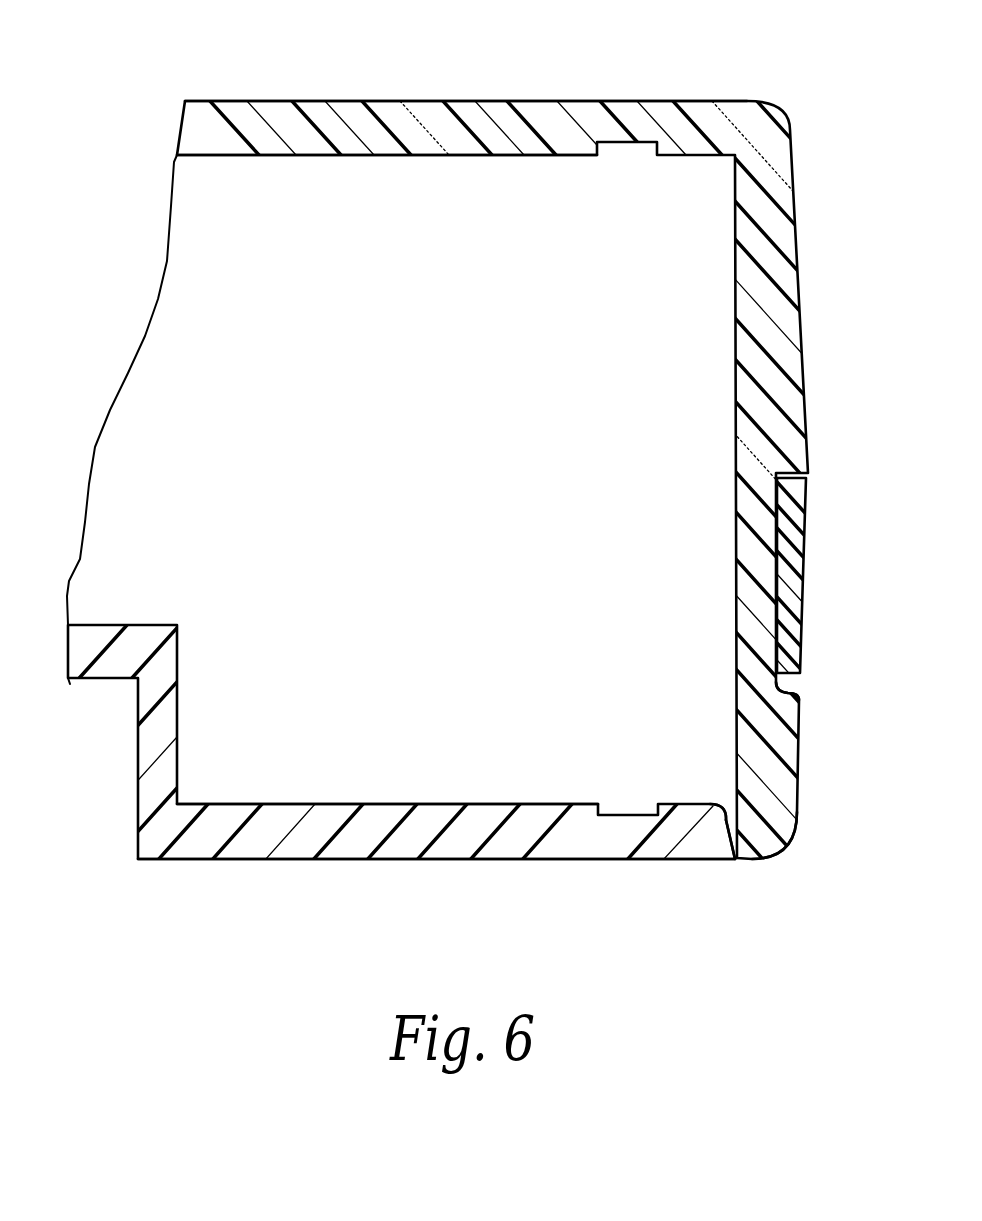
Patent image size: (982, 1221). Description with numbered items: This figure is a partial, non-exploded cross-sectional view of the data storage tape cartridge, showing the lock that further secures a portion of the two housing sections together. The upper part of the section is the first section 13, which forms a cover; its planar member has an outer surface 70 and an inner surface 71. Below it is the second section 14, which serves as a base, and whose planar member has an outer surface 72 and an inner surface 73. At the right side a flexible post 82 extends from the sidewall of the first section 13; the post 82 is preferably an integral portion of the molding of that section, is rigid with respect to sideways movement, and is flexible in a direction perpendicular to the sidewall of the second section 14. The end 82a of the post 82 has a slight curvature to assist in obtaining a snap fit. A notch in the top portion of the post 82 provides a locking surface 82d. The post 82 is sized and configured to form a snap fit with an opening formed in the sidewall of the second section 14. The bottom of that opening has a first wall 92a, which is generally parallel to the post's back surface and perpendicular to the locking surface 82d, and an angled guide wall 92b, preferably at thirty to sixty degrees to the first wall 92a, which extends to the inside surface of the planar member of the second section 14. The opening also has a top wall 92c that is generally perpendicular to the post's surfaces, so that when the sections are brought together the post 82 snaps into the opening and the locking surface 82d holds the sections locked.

The first section 13 is at (458, 101).
The second section 14 is at (400, 861).
The outer surface 70 is at (314, 100).
The inner surface 71 is at (347, 157).
The outer surface 72 is at (334, 862).
The inner surface 73 is at (302, 804).
The flexible post 82 is at (762, 766).
The end 82a is at (774, 854).
The locking surface 82d is at (796, 701).
The first wall 92a is at (740, 862).
The angled guide wall 92b is at (724, 812).
The top wall 92c is at (795, 673).